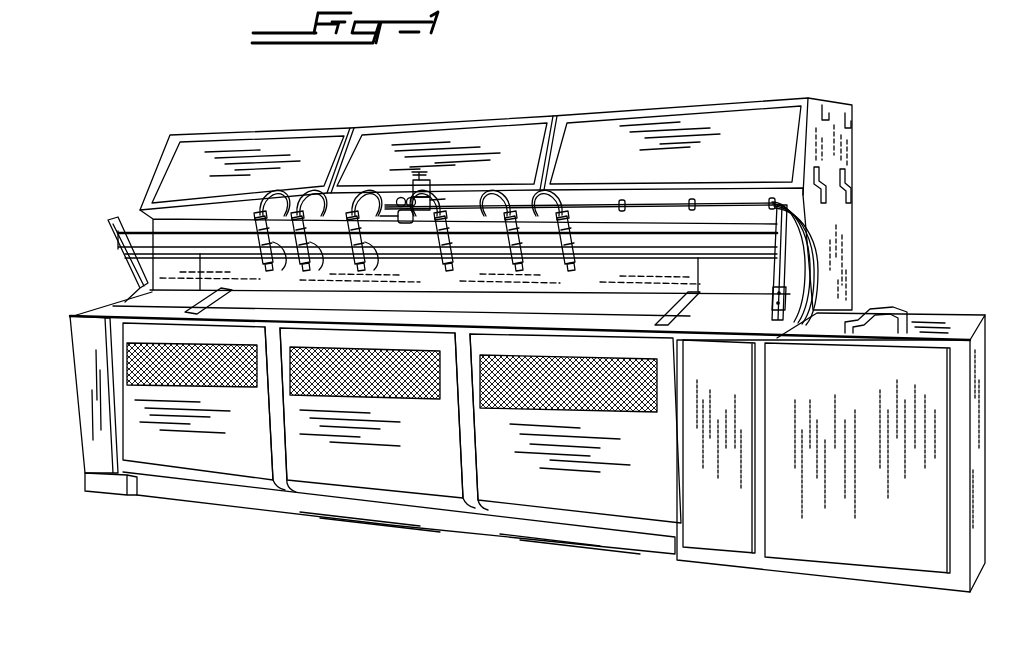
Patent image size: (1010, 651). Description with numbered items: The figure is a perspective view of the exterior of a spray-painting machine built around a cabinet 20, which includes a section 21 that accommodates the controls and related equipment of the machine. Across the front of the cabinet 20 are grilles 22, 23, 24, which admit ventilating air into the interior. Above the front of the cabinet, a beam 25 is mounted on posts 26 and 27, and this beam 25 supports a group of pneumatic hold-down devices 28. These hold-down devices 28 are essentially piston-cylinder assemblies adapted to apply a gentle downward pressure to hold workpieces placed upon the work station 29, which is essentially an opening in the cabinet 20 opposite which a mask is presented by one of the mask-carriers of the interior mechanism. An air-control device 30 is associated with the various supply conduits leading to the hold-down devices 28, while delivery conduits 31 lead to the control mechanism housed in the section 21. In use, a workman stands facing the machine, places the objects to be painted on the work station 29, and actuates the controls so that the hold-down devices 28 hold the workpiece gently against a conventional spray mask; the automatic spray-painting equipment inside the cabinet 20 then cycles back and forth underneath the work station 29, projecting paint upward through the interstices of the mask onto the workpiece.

The cabinet 20 is at (843, 163).
The section 21 is at (837, 316).
The grille 22 is at (215, 373).
The grille 23 is at (378, 385).
The grille 24 is at (575, 395).
The beam 25 is at (132, 230).
The post 26 is at (123, 253).
The post 27 is at (783, 250).
The pneumatic hold-down device 28 is at (360, 264).
The work station 29 is at (240, 305).
The air-control device 30 is at (430, 186).
The delivery conduit 31 is at (817, 274).